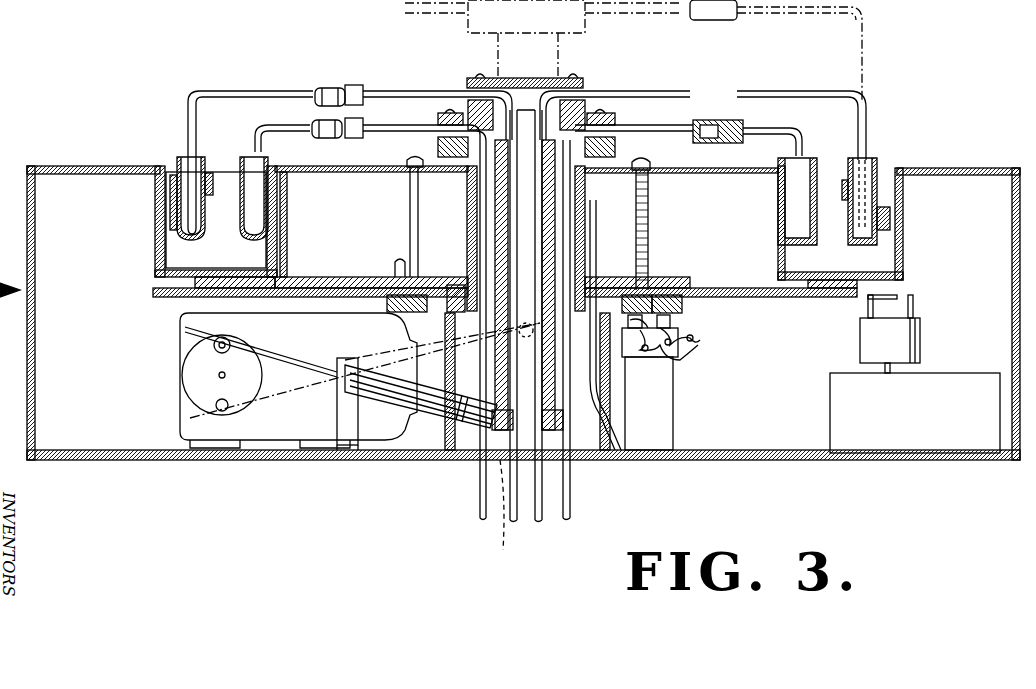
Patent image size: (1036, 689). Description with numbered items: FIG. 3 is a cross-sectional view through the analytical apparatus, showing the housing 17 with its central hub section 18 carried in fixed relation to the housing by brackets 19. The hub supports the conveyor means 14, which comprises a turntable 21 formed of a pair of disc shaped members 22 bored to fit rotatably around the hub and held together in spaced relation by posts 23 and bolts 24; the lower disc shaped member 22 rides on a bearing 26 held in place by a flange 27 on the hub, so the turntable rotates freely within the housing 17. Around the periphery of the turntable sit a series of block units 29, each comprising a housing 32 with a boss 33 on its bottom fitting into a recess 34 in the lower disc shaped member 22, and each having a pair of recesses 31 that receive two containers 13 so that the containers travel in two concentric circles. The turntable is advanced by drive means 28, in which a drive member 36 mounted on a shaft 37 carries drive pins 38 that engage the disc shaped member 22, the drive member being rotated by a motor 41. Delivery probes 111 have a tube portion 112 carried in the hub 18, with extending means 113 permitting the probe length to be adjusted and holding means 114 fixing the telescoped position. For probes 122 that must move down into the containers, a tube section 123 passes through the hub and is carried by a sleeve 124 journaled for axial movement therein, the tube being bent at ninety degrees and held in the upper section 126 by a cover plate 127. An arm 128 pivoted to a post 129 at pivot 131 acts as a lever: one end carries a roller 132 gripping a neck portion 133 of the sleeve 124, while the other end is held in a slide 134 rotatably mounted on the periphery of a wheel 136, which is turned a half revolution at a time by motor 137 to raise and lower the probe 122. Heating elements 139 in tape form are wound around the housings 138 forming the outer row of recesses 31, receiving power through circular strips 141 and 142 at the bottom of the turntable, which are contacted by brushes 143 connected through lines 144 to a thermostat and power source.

The container 13 is at (800, 162).
The conveyor means 14 is at (178, 160).
The housing 17 is at (105, 165).
The central hub section 18 is at (468, 238).
The bracket 19 is at (448, 452).
The turntable 21 is at (722, 168).
The disc shaped member 22 is at (335, 170).
The post 23 is at (408, 218).
The bolt 24 is at (410, 158).
The bearing 26 is at (445, 305).
The flange 27 is at (445, 330).
The drive means 28 is at (923, 341).
The block unit 29 is at (155, 250).
The recess 31 is at (248, 232).
The housing 32 is at (158, 183).
The boss 33 is at (282, 280).
The recess 34 is at (240, 296).
The drive member 36 is at (860, 338).
The shaft 37 is at (892, 368).
The drive pin 38 is at (915, 307).
The motor 41 is at (843, 402).
The delivery probe 111 is at (290, 135).
The tube portion 112 is at (392, 130).
The extending means 113 is at (348, 84).
The holding means 114 is at (337, 87).
The probe 122 is at (866, 128).
The tube section 123 is at (572, 128).
The sleeve 124 is at (478, 112).
The upper section 126 is at (580, 108).
The cover plate 127 is at (548, 78).
The arm 128 is at (425, 405).
The post 129 is at (340, 440).
The pivot 131 is at (360, 365).
The roller 132 is at (500, 540).
The neck portion 133 is at (575, 456).
The slide 134 is at (228, 343).
The wheel 136 is at (195, 385).
The motor 137 is at (180, 352).
The housing 138 is at (185, 243).
The heating element 139 is at (218, 176).
The strip 141 is at (655, 300).
The strip 142 is at (672, 298).
The brush 143 is at (690, 327).
The line 144 is at (700, 343).